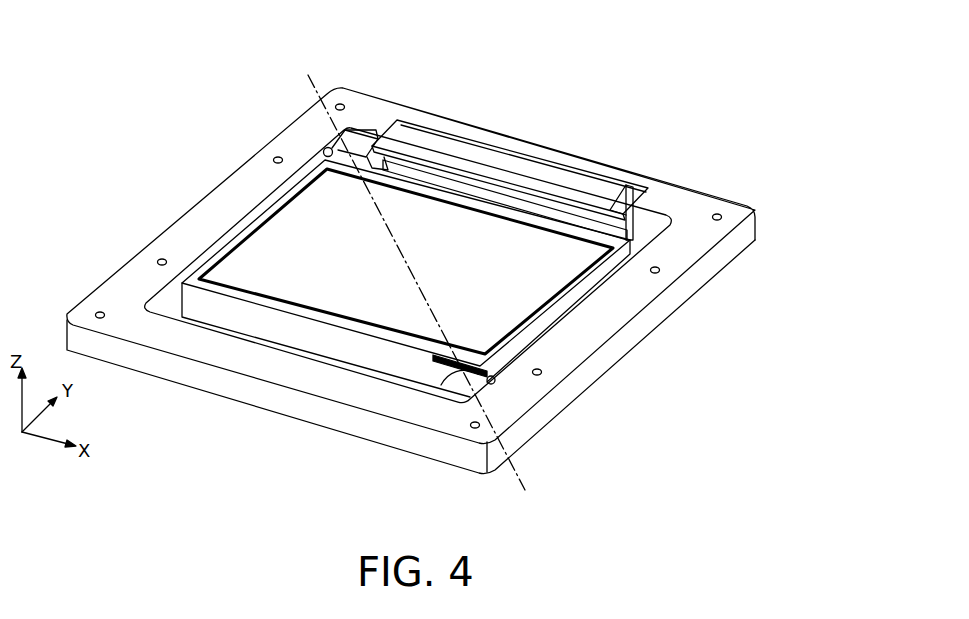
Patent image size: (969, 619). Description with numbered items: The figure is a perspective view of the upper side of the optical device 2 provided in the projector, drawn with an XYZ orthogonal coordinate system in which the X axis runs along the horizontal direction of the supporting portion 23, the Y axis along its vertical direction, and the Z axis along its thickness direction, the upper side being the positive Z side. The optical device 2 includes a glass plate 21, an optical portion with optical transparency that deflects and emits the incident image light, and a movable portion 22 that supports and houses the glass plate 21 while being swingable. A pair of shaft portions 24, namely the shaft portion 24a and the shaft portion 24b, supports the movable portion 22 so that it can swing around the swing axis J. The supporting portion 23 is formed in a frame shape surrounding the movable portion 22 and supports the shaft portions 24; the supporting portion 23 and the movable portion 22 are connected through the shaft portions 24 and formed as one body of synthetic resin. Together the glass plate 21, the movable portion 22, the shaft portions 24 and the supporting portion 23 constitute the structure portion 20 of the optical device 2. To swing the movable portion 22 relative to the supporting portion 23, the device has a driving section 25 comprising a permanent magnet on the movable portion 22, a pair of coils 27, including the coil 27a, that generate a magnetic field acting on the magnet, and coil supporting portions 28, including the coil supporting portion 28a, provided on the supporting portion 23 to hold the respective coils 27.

The optical device 2 is at (761, 40).
The structure portion 20 is at (543, 420).
The glass plate 21 is at (530, 276).
The movable portion 22 is at (530, 323).
The supporting portion 23 is at (288, 366).
The shaft portions 24 is at (404, 277).
The shaft portion 24a is at (345, 133).
The shaft portion 24b is at (456, 384).
The driving section 25 is at (572, 60).
The coils 27 is at (523, 180).
The coil 27a is at (573, 218).
The coil supporting portions 28 is at (510, 155).
The coil supporting portion 28a is at (513, 172).
The swing axis J is at (400, 229).